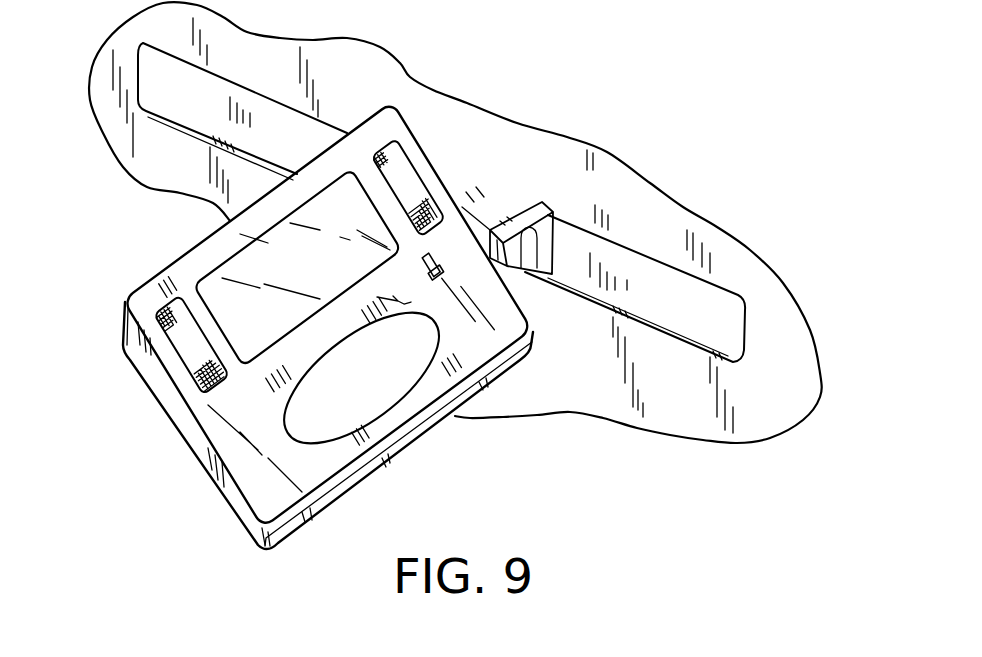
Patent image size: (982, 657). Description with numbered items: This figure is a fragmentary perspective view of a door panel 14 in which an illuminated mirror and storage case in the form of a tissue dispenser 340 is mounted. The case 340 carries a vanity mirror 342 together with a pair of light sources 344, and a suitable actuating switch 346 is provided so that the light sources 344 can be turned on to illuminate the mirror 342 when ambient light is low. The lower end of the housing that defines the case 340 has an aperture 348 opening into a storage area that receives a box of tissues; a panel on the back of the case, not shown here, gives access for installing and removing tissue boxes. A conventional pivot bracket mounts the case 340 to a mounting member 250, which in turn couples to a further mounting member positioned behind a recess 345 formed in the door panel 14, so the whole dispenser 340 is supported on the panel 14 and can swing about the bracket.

The door panel 14 is at (707, 251).
The mounting member 250 is at (527, 204).
The tissue dispenser 340 is at (166, 264).
The vanity mirror 342 is at (323, 283).
The light sources 344 is at (417, 181).
The recess 345 is at (655, 226).
The actuating switch 346 is at (441, 254).
The aperture 348 is at (377, 398).